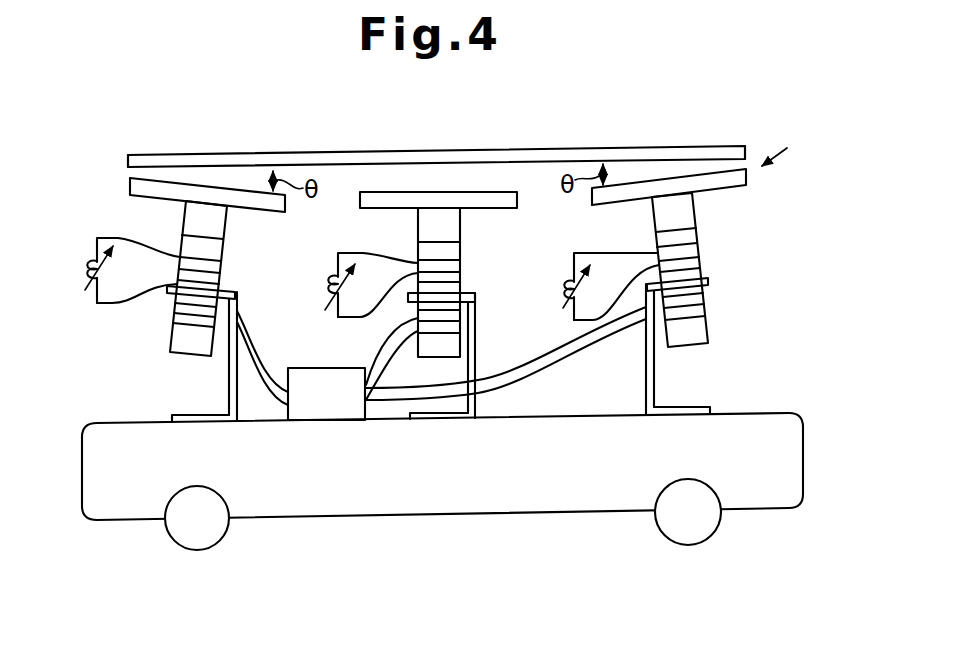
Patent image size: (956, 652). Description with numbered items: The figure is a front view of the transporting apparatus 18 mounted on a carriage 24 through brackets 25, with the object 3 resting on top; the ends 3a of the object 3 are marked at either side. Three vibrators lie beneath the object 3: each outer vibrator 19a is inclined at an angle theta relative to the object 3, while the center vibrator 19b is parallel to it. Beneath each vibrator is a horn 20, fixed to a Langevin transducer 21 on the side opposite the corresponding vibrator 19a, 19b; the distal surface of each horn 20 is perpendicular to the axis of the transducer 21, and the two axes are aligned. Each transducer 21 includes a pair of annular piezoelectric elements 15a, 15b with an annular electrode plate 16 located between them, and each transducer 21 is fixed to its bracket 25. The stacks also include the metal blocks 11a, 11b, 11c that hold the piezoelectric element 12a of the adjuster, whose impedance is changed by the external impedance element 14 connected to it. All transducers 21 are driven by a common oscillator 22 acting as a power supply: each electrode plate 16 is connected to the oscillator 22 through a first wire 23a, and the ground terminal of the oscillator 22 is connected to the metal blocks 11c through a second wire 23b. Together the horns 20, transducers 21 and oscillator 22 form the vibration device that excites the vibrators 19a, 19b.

The object 3 is at (382, 151).
The panel end portion 3a is at (128, 156).
The metal block 11a is at (183, 243).
The metal block 11b is at (172, 300).
The metal block 11c is at (190, 345).
The piezoelectric element 12a is at (220, 266).
The external impedance element 14 is at (90, 267).
The annular piezoelectric element 15a is at (207, 308).
The annular piezoelectric element 15b is at (186, 335).
The annular electrode plate 16 is at (170, 327).
The transporting apparatus 18 is at (819, 162).
The outer vibrator 19a is at (129, 185).
The center vibrator 19b is at (360, 200).
The horn 20 is at (226, 221).
The Langevin transducer 21 is at (196, 363).
The oscillator 22 is at (328, 410).
The first wire 23a is at (270, 388).
The second wire 23b is at (263, 395).
The carriage 24 is at (782, 415).
The bracket 25 is at (203, 423).